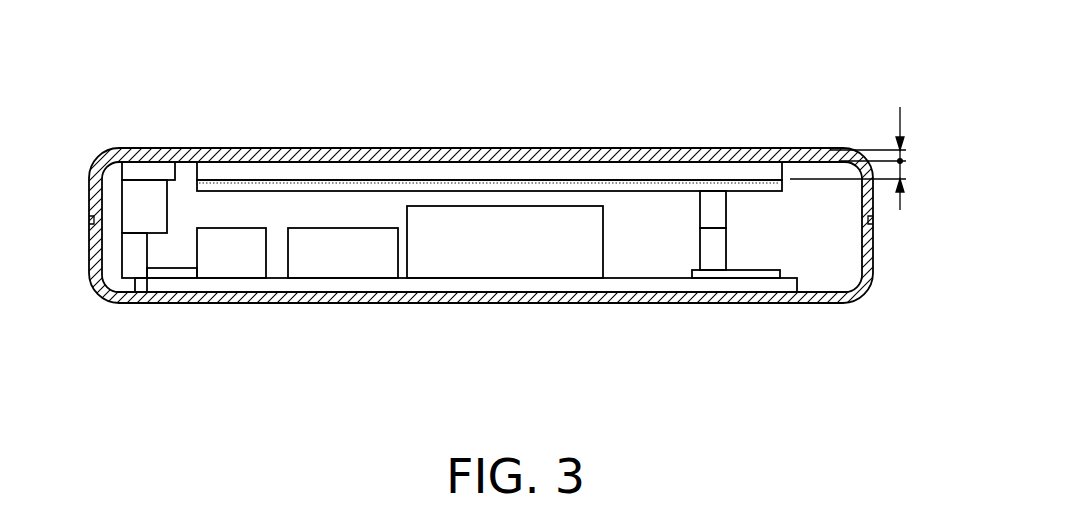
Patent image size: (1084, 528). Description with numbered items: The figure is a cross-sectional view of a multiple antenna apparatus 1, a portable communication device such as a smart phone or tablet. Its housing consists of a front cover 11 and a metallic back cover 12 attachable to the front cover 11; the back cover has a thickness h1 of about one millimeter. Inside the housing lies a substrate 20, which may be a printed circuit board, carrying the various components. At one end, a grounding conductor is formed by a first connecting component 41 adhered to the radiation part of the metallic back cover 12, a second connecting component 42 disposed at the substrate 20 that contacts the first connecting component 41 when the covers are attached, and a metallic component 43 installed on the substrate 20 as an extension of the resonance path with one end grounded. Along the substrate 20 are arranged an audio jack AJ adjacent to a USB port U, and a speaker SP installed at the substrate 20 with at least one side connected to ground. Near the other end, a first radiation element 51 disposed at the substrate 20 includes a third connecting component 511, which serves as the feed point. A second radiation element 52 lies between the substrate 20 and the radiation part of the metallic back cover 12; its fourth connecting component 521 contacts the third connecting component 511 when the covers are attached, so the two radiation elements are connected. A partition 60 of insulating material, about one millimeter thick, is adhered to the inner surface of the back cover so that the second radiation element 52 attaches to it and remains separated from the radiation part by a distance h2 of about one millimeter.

The multiple antenna apparatus 1 is at (143, 62).
The front cover 11 is at (797, 301).
The metallic back cover 12 is at (798, 149).
The substrate 20 is at (467, 283).
The first connecting component 41 is at (143, 190).
The second connecting component 42 is at (130, 262).
The metallic component 43 is at (171, 273).
The first radiation element 51 is at (738, 275).
The third connecting component 511 is at (707, 250).
The second radiation element 52 is at (642, 186).
The fourth connecting component 521 is at (722, 213).
The partition 60 is at (513, 171).
The audio jack AJ is at (230, 258).
The USB port U is at (337, 259).
The speaker SP is at (523, 258).
The thickness of the metallic back cover h1 is at (883, 158).
The distance between the second radiation element and the radiation part h2 is at (864, 179).